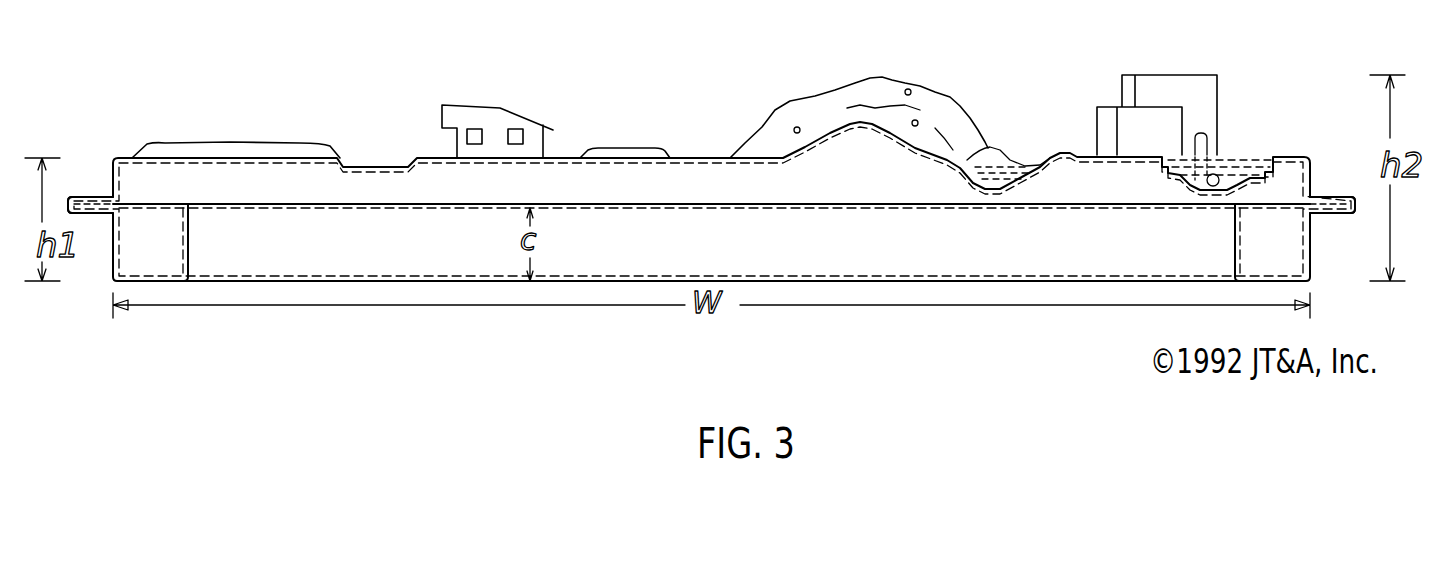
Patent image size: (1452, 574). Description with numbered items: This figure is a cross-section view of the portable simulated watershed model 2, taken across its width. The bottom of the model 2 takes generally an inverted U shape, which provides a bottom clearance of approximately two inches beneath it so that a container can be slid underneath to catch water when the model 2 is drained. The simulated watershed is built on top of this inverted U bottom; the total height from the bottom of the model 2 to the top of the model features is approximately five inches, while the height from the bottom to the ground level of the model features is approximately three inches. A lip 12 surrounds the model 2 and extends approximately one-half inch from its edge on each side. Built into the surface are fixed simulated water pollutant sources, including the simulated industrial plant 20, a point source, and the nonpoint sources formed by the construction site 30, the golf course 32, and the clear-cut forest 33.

The portable simulated watershed model 2 is at (1320, 250).
The lip 12 is at (106, 196).
The simulated industrial plant 20 is at (1217, 92).
The construction site 30 is at (218, 143).
The golf course 32 is at (652, 147).
The clear-cut forest 33 is at (785, 105).